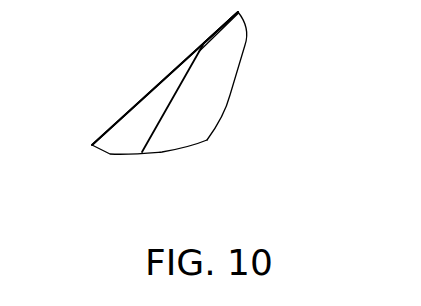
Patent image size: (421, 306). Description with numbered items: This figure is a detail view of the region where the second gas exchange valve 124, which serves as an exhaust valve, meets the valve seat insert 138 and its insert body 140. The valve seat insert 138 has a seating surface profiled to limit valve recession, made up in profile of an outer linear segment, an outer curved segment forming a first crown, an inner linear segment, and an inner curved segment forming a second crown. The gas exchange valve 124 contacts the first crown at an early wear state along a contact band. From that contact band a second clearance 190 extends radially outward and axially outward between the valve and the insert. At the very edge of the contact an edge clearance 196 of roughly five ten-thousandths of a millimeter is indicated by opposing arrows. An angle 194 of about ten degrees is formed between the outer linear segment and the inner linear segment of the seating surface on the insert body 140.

The second gas exchange valve 124 is at (207, 138).
The valve seat insert 138 is at (126, 113).
The insert body 140 is at (165, 78).
The second clearance 190 is at (210, 33).
The angle 194 is at (283, 1).
The edge clearance 196 is at (222, 73).